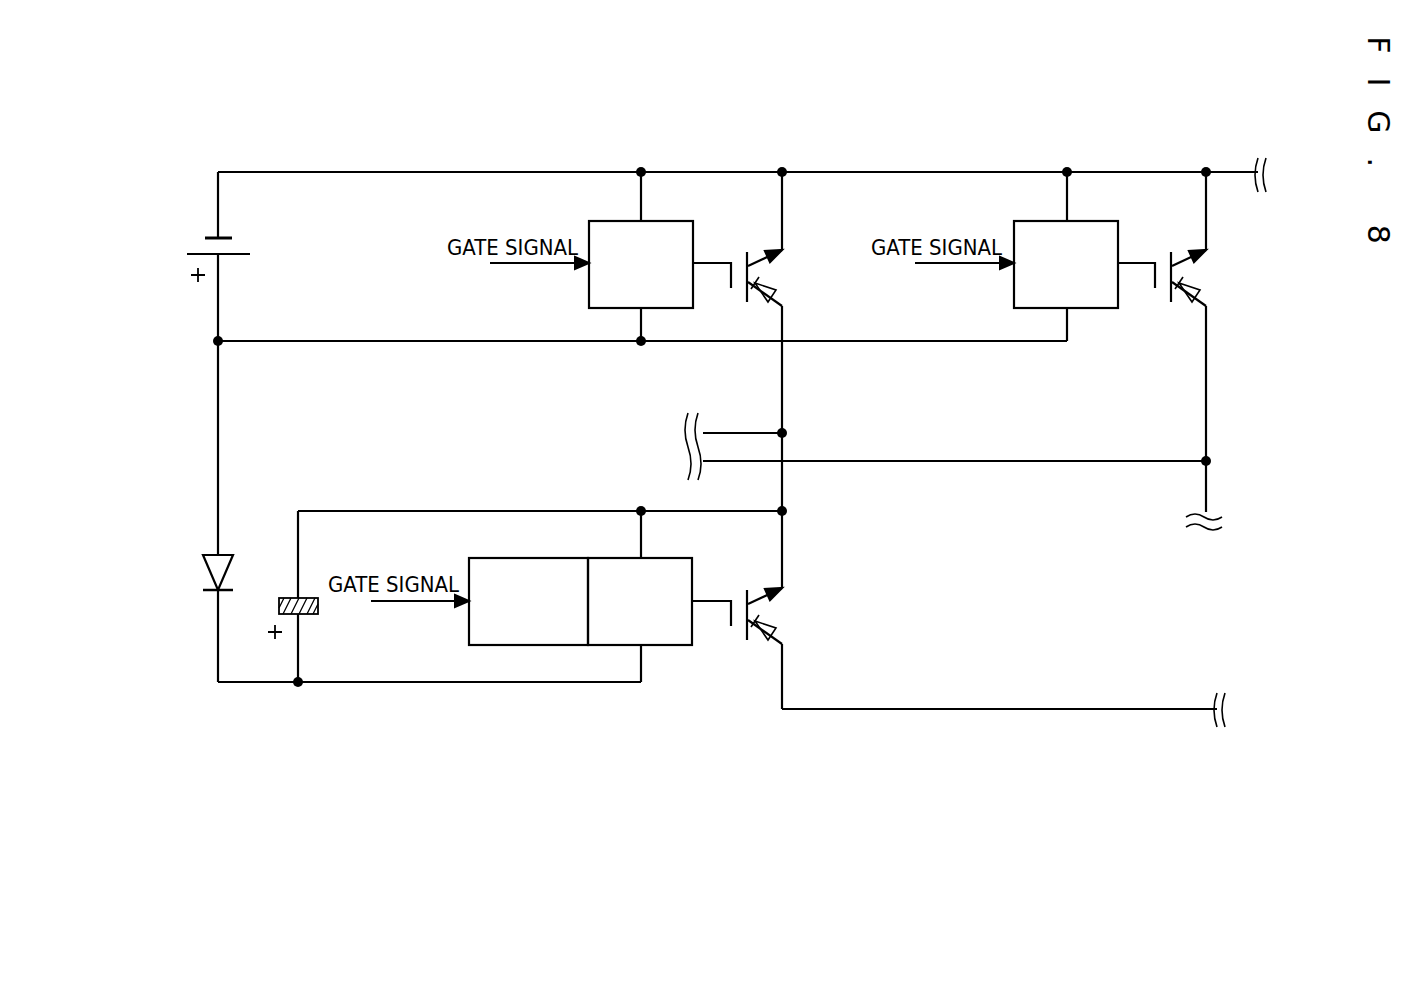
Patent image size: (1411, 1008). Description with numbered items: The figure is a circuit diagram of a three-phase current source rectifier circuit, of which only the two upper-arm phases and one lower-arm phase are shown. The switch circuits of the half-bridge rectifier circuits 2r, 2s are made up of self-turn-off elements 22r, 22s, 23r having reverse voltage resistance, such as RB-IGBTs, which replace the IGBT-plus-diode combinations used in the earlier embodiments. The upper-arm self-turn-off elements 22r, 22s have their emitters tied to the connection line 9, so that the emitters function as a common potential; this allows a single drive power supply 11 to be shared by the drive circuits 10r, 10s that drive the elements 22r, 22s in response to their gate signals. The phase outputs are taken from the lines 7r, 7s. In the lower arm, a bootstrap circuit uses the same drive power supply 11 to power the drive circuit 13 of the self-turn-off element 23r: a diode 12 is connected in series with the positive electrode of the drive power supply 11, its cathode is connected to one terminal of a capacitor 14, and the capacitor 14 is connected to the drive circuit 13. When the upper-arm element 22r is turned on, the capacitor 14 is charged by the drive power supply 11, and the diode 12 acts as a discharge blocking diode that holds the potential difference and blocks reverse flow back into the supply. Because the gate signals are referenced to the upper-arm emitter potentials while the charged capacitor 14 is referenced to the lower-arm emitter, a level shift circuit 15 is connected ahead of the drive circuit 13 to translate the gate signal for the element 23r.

The half-bridge rectifier circuit 2r is at (789, 158).
The half-bridge rectifier circuit 2s is at (1213, 158).
The R-phase output line 7r is at (790, 434).
The S-phase output line 7s is at (1213, 463).
The connection line 9 is at (1236, 176).
The drive circuit 10r is at (693, 242).
The drive circuit 10s is at (1118, 242).
The drive power supply 11 is at (187, 249).
The diode 12 is at (202, 576).
The drive circuit 13 is at (667, 558).
The capacitor 14 is at (283, 598).
The level shift circuit 15 is at (513, 558).
The self-turn-off element 22r is at (770, 279).
The self-turn-off element 22s is at (1196, 281).
The self-turn-off element 23r is at (770, 618).